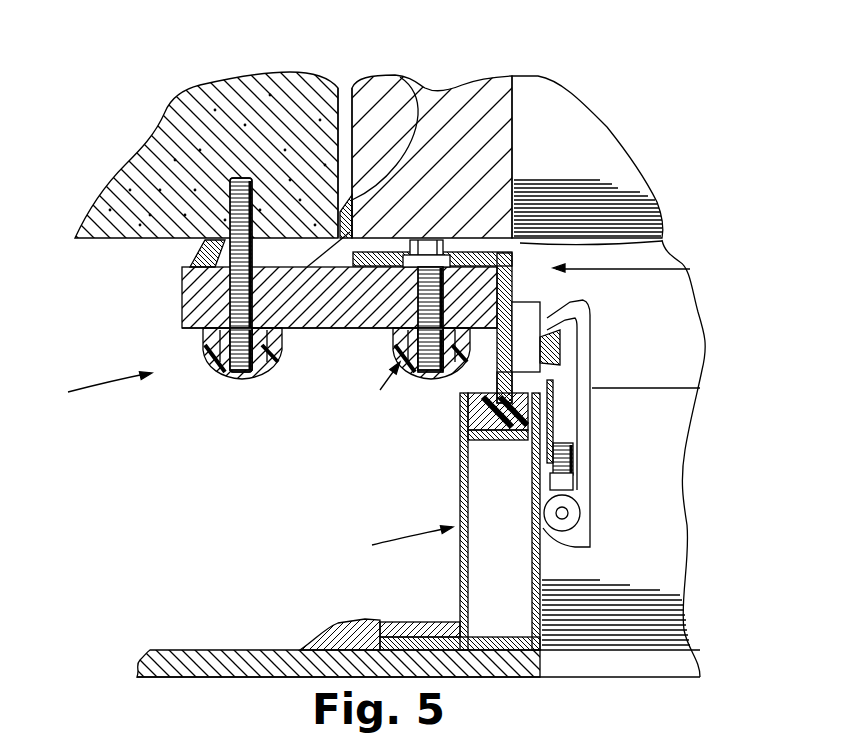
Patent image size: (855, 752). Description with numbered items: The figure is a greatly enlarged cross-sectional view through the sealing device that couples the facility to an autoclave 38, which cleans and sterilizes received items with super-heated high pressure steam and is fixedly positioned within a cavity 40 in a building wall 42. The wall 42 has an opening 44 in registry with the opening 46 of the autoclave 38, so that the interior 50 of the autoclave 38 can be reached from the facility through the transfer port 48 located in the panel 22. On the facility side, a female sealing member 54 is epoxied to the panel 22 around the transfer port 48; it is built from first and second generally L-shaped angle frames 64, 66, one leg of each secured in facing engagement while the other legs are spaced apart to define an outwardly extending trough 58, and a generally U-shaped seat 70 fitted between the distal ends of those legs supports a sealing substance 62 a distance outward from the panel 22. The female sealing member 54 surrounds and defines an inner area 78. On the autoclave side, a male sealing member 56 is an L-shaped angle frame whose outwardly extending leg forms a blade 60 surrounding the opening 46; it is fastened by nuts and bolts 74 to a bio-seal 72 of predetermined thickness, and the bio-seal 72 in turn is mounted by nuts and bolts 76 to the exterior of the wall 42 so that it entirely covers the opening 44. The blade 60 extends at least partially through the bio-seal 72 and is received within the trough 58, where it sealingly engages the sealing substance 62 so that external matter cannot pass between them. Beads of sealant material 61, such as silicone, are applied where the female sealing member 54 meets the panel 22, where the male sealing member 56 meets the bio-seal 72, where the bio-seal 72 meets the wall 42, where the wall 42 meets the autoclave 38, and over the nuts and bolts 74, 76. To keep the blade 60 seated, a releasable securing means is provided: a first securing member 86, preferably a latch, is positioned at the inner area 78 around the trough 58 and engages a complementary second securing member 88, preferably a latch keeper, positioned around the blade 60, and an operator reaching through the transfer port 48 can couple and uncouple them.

The panel 22 is at (170, 657).
The autoclave 38 is at (496, 95).
The cavity 40 is at (348, 85).
The wall 42 is at (233, 82).
The opening 44 is at (182, 318).
The opening 46 is at (660, 240).
The transfer port 48 is at (663, 663).
The interior 50 is at (578, 152).
The female sealing member 54 is at (436, 521).
The male sealing member 56 is at (690, 269).
The trough 58 is at (463, 410).
The blade 60 is at (500, 375).
The sealant material 61 is at (419, 85).
The sealing substance 62 is at (478, 418).
The first L-shaped angle frame 64 is at (462, 580).
The second L-shaped angle frame 66 is at (540, 576).
The seat 70 is at (492, 440).
The bio-seal 72 is at (327, 320).
The nuts and bolts 74 is at (408, 330).
The nuts and bolts 76 is at (155, 295).
The inner area 78 is at (665, 446).
The first securing member 86 is at (587, 483).
The second securing member 88 is at (547, 358).